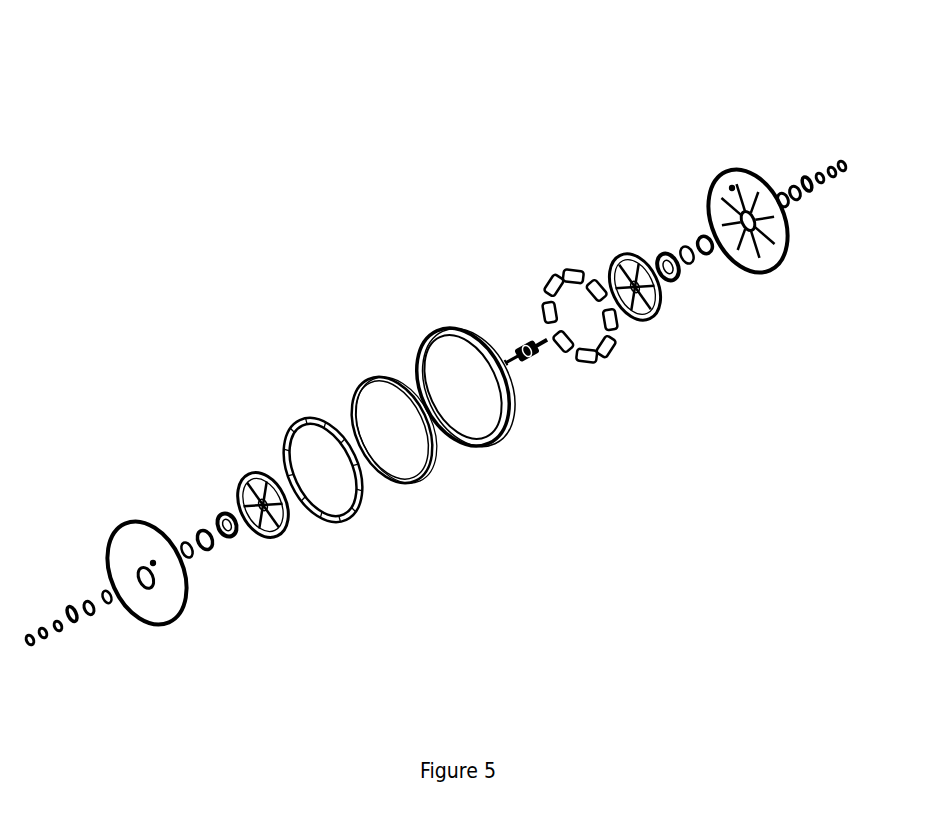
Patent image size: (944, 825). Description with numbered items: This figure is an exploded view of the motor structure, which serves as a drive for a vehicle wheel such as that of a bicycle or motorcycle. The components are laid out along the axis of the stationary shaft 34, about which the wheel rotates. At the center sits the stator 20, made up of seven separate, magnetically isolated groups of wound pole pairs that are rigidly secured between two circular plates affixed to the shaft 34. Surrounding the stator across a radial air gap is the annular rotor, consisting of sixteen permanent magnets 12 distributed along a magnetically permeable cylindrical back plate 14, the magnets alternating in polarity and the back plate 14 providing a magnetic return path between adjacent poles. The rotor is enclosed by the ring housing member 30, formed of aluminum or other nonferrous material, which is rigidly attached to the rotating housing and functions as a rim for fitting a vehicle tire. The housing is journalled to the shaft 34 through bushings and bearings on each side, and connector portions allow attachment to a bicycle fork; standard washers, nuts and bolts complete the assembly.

The permanent magnets 12 is at (327, 423).
The cylindrical back plate 14 is at (432, 461).
The stator member 20 is at (581, 284).
The ring housing member 30 is at (464, 333).
The shaft 34 is at (531, 357).